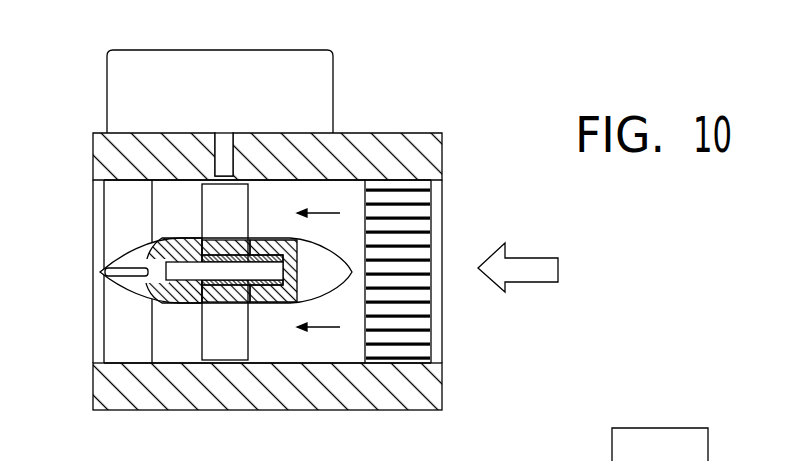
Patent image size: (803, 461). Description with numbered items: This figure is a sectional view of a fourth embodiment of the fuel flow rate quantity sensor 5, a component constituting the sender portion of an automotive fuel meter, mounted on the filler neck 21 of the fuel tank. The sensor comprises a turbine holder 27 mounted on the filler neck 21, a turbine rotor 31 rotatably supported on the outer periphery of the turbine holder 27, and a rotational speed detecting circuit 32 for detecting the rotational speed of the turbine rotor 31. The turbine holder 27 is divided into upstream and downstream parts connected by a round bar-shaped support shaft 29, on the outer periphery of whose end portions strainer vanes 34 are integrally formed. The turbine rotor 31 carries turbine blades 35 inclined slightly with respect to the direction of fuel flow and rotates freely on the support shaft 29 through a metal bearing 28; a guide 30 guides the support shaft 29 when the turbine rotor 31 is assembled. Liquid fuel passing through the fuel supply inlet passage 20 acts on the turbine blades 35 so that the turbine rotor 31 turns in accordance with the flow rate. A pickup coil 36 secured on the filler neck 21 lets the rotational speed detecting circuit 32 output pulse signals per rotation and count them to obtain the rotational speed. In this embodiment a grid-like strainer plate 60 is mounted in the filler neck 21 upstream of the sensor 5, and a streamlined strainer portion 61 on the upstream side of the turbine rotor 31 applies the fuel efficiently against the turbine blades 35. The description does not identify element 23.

The fuel flow rate quantity sensor 5 is at (484, 109).
The fuel supply inlet passage 20 is at (260, 340).
The filler neck 21 is at (108, 153).
The member 23 is at (685, 444).
The turbine holder 27 is at (182, 303).
The metal bearing 28 is at (203, 240).
The support shaft 29 is at (285, 302).
The guide 30 is at (287, 238).
The turbine rotor 31 is at (217, 303).
The rotational speed detecting circuit 32 is at (318, 90).
The strainer vane 34 is at (115, 325).
The turbine blade 35 is at (235, 348).
The pickup coil 36 is at (222, 150).
The strainer plate 60 is at (433, 331).
The streamlined strainer portion 61 is at (337, 275).